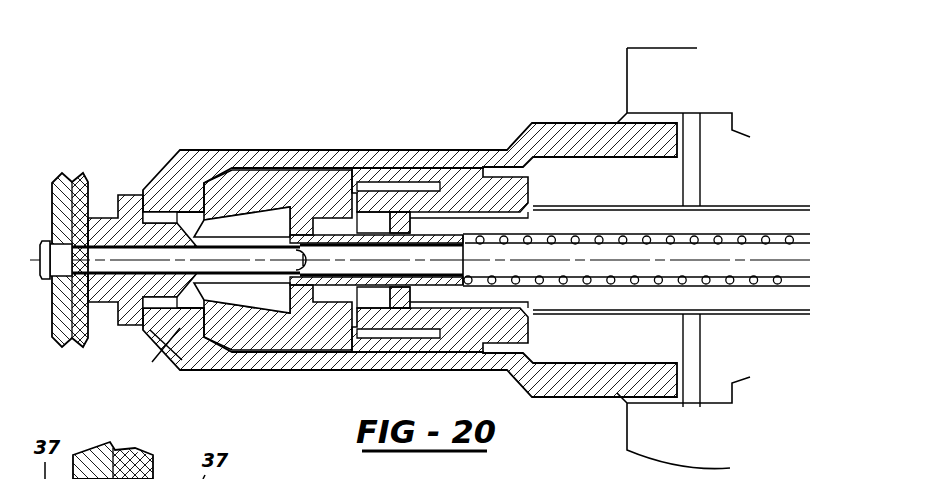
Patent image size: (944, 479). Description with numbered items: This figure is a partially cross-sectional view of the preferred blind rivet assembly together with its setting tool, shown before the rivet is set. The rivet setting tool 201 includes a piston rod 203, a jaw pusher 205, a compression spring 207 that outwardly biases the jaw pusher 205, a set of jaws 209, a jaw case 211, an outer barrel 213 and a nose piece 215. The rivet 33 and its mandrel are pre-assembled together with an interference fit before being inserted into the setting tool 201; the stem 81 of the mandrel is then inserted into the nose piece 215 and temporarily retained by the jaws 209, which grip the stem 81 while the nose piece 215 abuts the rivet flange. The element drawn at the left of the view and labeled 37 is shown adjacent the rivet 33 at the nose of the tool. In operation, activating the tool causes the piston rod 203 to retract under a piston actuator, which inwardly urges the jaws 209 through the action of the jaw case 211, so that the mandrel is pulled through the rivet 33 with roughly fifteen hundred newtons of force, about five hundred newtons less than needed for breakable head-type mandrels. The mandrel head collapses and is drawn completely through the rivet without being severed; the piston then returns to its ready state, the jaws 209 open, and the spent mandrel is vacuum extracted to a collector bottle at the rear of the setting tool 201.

The rivet setting tool 201 is at (478, 84).
The piston rod 203 is at (597, 300).
The jaw pusher 205 is at (310, 220).
The compression spring 207 is at (750, 236).
The jaws 209 is at (268, 218).
The jaw case 211 is at (228, 193).
The outer barrel 213 is at (188, 336).
The nose piece 215 is at (105, 227).
The stem 81 is at (173, 253).
The rivet 33 is at (62, 247).
The cutting wheel 37 is at (62, 174).